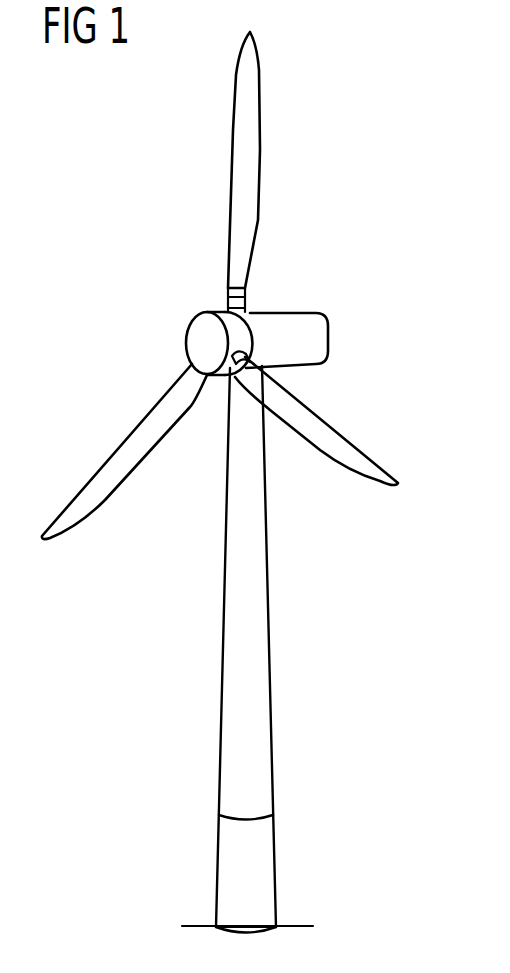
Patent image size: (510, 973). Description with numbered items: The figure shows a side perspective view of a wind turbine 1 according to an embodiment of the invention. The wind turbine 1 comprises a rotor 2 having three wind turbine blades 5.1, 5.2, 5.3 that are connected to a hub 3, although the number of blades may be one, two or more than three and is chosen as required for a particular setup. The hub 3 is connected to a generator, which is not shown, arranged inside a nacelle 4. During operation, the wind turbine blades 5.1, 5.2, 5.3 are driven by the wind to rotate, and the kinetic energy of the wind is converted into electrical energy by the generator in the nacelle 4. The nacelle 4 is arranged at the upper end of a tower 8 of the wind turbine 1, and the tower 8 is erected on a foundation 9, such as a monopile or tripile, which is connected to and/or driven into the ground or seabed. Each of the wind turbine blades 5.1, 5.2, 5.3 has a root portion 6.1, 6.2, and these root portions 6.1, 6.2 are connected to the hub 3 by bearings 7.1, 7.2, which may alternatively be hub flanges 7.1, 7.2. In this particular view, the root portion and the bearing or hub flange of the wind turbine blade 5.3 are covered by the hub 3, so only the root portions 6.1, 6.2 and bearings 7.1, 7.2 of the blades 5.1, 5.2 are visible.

The wind turbine 1 is at (247, 482).
The rotor 2 is at (220, 285).
The hub 3 is at (197, 338).
The nacelle 4 is at (318, 342).
The wind turbine blade 5.1 is at (247, 168).
The wind turbine blade 5.2 is at (350, 438).
The wind turbine blade 5.3 is at (121, 460).
The root portion 6.1 is at (229, 297).
The root portion 6.2 is at (239, 381).
The bearing 7.1 is at (244, 307).
The bearing 7.2 is at (222, 375).
The tower 8 is at (262, 632).
The foundation 9 is at (265, 866).